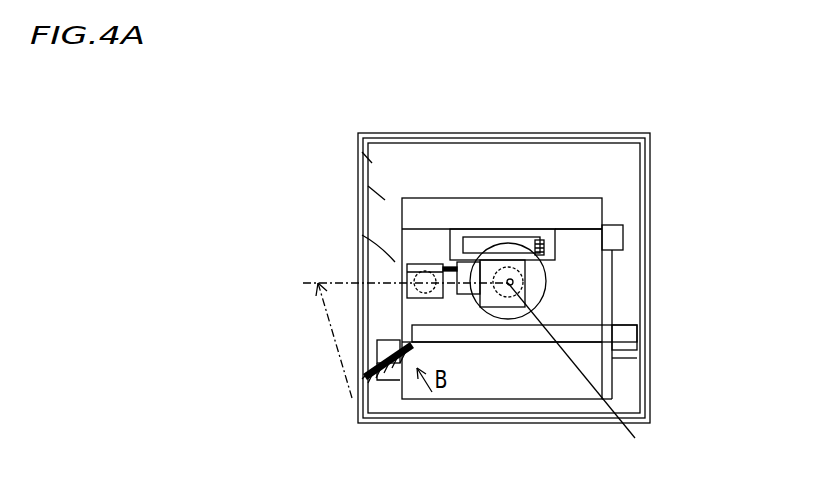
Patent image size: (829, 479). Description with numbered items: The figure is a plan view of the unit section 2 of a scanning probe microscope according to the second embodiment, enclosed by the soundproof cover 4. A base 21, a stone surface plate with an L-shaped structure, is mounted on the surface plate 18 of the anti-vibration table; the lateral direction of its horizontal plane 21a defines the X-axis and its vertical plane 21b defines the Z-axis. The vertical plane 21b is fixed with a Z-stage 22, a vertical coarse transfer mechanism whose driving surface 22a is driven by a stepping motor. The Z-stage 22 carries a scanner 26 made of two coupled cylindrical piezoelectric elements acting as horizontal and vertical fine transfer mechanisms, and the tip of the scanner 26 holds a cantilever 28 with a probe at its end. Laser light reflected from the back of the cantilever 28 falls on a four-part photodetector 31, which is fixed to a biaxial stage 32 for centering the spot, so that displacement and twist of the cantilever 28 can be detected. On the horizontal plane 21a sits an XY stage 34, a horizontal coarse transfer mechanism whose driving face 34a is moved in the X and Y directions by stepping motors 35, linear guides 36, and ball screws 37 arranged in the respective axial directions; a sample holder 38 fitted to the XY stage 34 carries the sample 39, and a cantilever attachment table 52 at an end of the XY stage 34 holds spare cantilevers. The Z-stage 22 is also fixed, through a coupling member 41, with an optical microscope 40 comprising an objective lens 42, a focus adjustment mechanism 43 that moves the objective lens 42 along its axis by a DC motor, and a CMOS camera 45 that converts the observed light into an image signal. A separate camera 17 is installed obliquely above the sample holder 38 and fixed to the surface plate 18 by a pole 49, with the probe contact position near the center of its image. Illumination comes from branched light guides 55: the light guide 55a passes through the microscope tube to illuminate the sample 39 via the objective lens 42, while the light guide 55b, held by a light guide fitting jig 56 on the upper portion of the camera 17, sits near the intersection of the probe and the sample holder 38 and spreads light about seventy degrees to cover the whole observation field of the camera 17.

The unit section 2 is at (611, 194).
The soundproof cover 4 is at (605, 133).
The camera 17 is at (370, 383).
The surface plate 18 is at (650, 146).
The base 21 is at (457, 198).
The horizontal plane 21a is at (615, 330).
The vertical plane 21b is at (603, 270).
The Z-stage 22 is at (448, 240).
The driving surface 22a is at (556, 264).
The scanner 26 is at (541, 248).
The cantilever 28 is at (520, 262).
The photodetector 31 is at (450, 255).
The biaxial stage 32 is at (410, 400).
The XY stage 34 is at (452, 345).
The driving face 34a is at (535, 345).
The stepping motors 35 is at (620, 236).
The linear guides 36 is at (618, 350).
The ball screws 37 is at (610, 368).
The sample holder 38 is at (480, 345).
The sample 39 is at (512, 345).
The optical microscope 40 is at (368, 186).
The coupling member 41 is at (438, 258).
The objective lens 42 is at (468, 262).
The focus adjustment mechanism 43 is at (362, 235).
The CMOS camera 45 is at (362, 152).
The pole 49 is at (378, 352).
The cantilever attachment table 52 is at (548, 232).
The light guides 55 is at (336, 340).
The light guide 55a is at (362, 367).
The light guide 55b is at (407, 268).
The light guide fitting jig 56 is at (392, 384).